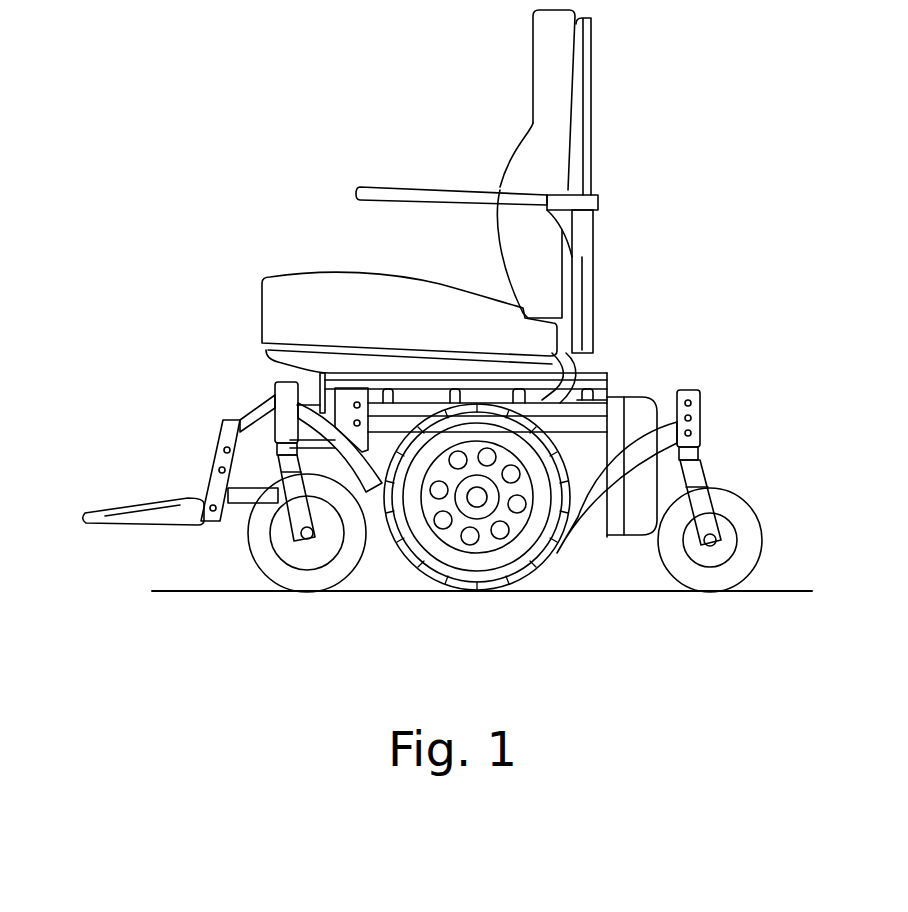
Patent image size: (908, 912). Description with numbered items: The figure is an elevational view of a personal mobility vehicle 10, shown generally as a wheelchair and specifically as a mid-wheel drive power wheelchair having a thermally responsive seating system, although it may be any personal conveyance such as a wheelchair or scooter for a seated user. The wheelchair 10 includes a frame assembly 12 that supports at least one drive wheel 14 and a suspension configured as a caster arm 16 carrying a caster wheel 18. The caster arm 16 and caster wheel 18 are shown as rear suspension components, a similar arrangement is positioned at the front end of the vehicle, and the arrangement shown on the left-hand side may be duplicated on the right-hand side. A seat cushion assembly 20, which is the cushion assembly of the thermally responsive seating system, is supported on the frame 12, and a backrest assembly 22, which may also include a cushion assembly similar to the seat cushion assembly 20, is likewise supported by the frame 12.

The personal mobility vehicle 10 is at (265, 100).
The frame assembly 12 is at (240, 386).
The drive wheel 14 is at (513, 592).
The caster arm 16 is at (722, 413).
The caster wheel 18 is at (763, 540).
The seat cushion assembly 20 is at (262, 322).
The backrest assembly 22 is at (547, 43).